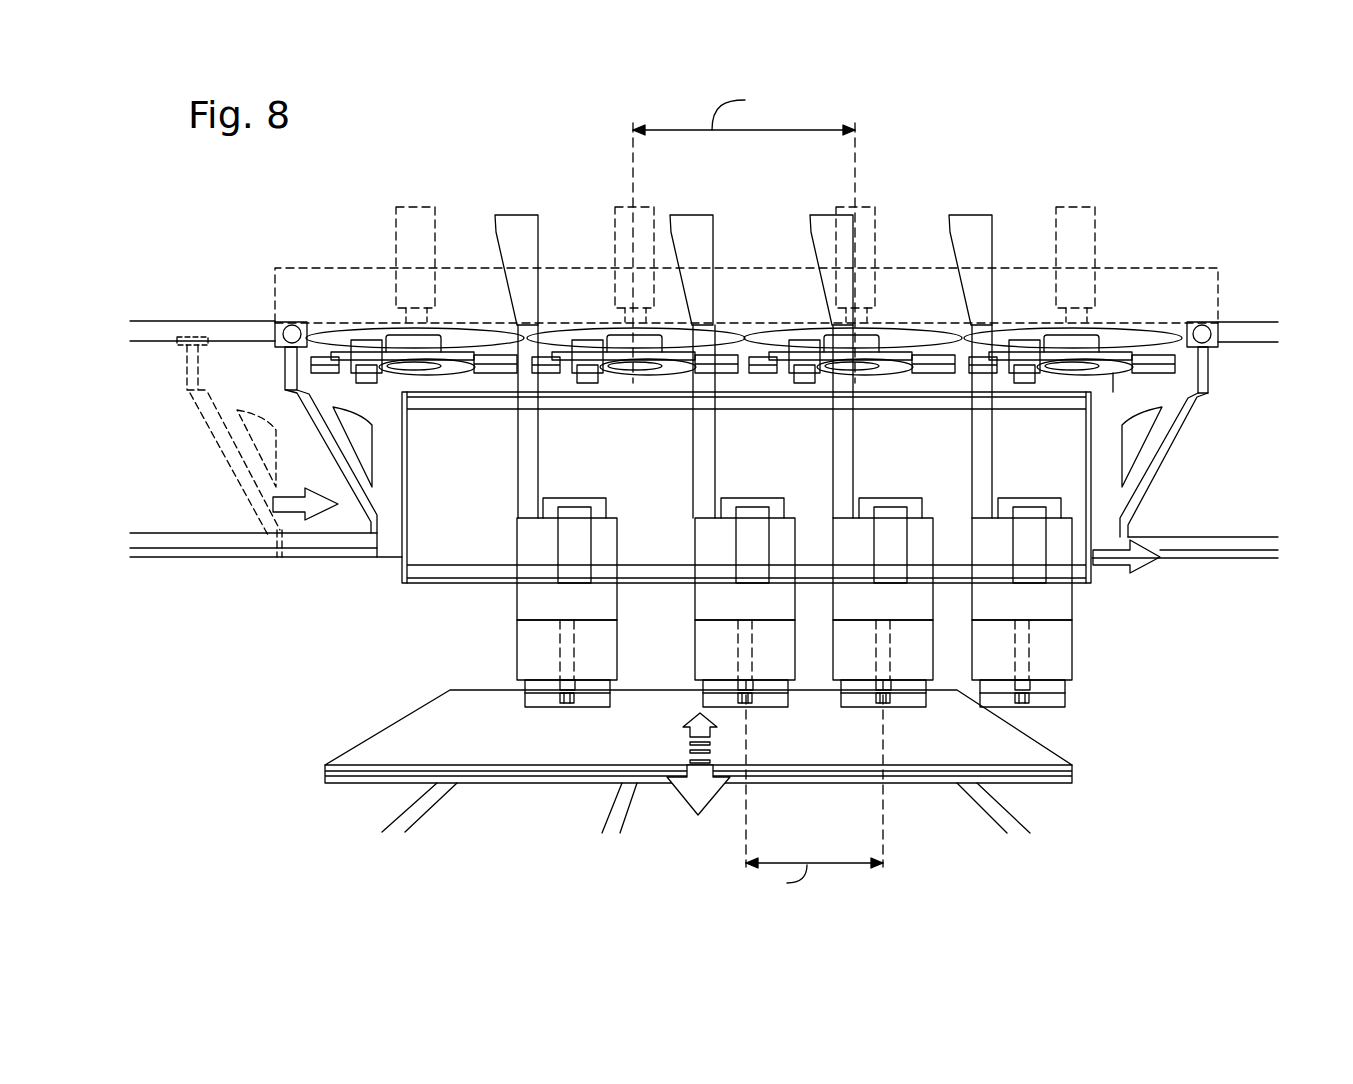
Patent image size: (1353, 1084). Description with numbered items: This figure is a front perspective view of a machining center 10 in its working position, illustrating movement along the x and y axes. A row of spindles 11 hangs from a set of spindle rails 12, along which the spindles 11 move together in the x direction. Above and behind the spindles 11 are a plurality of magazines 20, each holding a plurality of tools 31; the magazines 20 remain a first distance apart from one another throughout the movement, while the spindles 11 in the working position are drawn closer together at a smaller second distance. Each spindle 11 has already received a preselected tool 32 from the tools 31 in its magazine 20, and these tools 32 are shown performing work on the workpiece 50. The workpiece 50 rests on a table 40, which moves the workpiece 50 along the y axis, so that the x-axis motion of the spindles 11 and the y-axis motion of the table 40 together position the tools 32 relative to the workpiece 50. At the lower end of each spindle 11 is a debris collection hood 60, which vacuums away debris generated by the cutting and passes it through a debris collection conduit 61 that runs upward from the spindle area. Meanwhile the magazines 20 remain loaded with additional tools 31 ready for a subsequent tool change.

The machining center 10 is at (1147, 240).
The spindle rails 12 is at (145, 324).
The debris collection conduit 61 is at (967, 222).
The magazine 20 is at (1140, 372).
The tools 31 is at (1028, 360).
The spindle 11 is at (1025, 643).
The debris collection hood 60 is at (1062, 687).
The preselected tool 32 is at (1033, 698).
The workpiece 50 is at (1040, 753).
The table 40 is at (1012, 825).